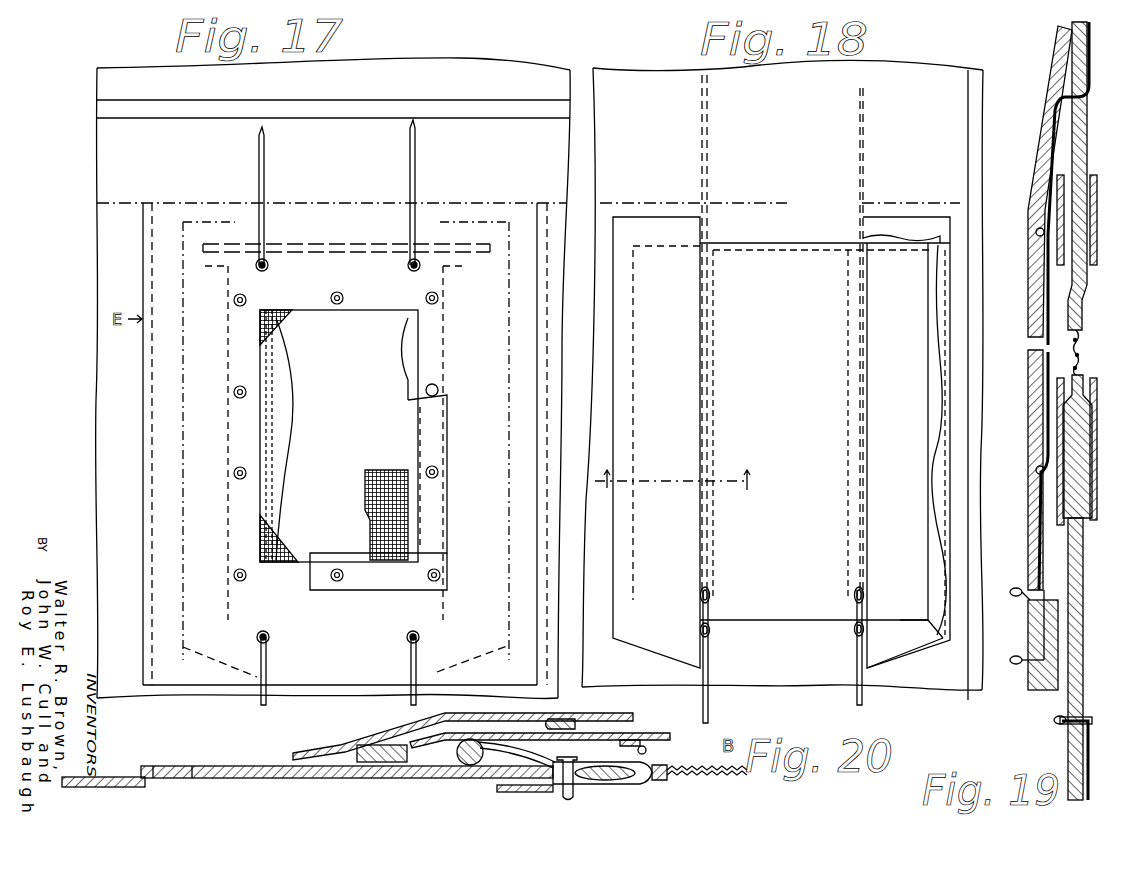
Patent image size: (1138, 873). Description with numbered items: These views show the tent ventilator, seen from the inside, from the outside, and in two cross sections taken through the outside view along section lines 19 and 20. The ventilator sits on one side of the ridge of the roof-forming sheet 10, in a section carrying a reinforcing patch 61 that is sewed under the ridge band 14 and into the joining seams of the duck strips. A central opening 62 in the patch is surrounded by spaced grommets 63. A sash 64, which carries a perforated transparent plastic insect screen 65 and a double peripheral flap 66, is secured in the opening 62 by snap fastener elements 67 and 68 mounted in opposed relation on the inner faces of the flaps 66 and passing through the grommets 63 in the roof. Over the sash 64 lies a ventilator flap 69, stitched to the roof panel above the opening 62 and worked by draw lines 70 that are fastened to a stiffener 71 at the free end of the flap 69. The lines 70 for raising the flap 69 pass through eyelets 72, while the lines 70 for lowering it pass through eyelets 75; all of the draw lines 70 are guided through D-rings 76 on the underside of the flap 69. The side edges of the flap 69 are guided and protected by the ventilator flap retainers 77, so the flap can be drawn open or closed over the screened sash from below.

In FIG. 17, the roof-forming sheet 10 is at (500, 74).
In FIG. 18, the roof-forming sheet 10 is at (637, 74).
In FIG. 19, the roof-forming sheet 10 is at (1050, 308).
In FIG. 20, the roof-forming sheet 10 is at (285, 766).
In FIG. 17, the ridge band 14 is at (376, 170).
In FIG. 18, the middle section ridge plate 19 is at (712, 240).
In FIG. 18, the rows of stitching 20 is at (681, 488).
In FIG. 17, the reinforcing patch 61 is at (345, 444).
In FIG. 19, the reinforcing patch 61 is at (1088, 138).
In FIG. 20, the reinforcing patch 61 is at (357, 779).
In FIG. 17, the central opening 62 is at (262, 437).
In FIG. 17, the grommets 63 is at (343, 294).
In FIG. 20, the grommets 63 is at (610, 784).
In FIG. 17, the sash 64 is at (455, 441).
In FIG. 19, the insect screen 65 is at (1080, 338).
In FIG. 20, the insect screen 65 is at (738, 772).
In FIG. 17, the double peripheral flap 66 is at (434, 522).
In FIG. 19, the double peripheral flap 66 is at (1097, 230).
In FIG. 20, the double peripheral flap 66 is at (644, 762).
In FIG. 20, the snap fastener element 67 is at (579, 784).
In FIG. 17, the snap fastener element 68 is at (446, 566).
In FIG. 20, the snap fastener element 68 is at (553, 790).
In FIG. 18, the ventilator flap 69 is at (781, 442).
In FIG. 19, the ventilator flap 69 is at (1034, 520).
In FIG. 17, the draw lines 70 is at (266, 166).
In FIG. 19, the draw lines 70 is at (1091, 74).
In FIG. 19, the stiffener 71 is at (1042, 692).
In FIG. 17, the eyelets 72 is at (419, 272).
In FIG. 19, the eyelets 72 is at (1089, 102).
In FIG. 17, the eyelets 75 is at (269, 636).
In FIG. 19, the eyelets 75 is at (1092, 718).
In FIG. 19, the D-rings 76 is at (1036, 234).
In FIG. 18, the ventilator flap retainers 77 is at (915, 655).
In FIG. 20, the ventilator flap retainers 77 is at (607, 722).